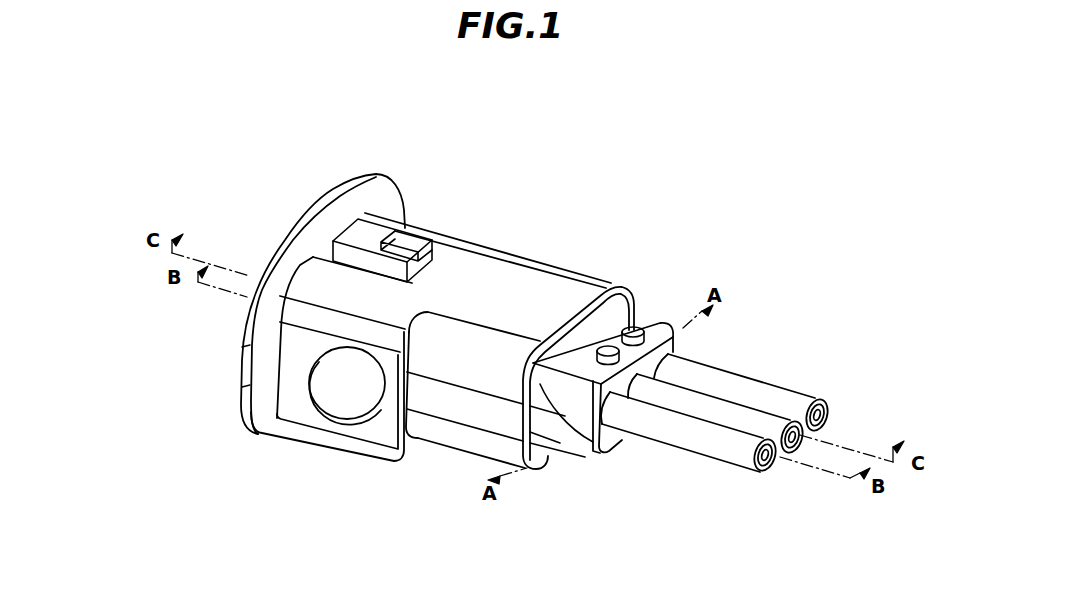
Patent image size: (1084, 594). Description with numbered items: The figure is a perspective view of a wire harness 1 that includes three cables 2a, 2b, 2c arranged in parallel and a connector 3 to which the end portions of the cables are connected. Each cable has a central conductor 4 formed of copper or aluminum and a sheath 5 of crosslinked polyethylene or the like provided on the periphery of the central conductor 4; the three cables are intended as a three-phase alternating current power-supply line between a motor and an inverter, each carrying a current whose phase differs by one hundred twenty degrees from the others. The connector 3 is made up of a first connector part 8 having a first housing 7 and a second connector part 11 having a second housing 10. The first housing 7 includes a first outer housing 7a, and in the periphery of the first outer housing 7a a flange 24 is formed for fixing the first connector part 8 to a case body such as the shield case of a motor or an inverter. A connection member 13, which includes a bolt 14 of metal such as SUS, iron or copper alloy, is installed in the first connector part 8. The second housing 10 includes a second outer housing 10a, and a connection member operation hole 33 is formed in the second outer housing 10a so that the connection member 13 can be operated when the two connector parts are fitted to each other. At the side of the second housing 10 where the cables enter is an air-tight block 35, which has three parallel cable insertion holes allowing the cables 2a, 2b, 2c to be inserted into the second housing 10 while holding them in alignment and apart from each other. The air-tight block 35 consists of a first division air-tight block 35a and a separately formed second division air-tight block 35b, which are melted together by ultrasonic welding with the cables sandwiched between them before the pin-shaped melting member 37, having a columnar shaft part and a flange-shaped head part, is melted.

The wire harness 1 is at (740, 135).
The cable 2a is at (745, 460).
The cable 2b is at (733, 410).
The cable 2c is at (800, 397).
The connector 3 is at (490, 163).
The central conductor 4 is at (772, 458).
The sheath 5 is at (715, 451).
The first housing 7 is at (240, 403).
The first outer housing 7a is at (316, 272).
The first connector part 8 is at (346, 180).
The second housing 10 is at (473, 258).
The second outer housing 10a is at (520, 271).
The second connector part 11 is at (622, 246).
The connection member 13 is at (363, 401).
The bolt 14 is at (342, 393).
The flange 24 is at (297, 234).
The connection member operation hole 33 is at (318, 397).
The air-tight block 35 is at (582, 463).
The first division air-tight block 35a is at (610, 452).
The second division air-tight block 35b is at (670, 340).
The melting member 37 is at (610, 345).